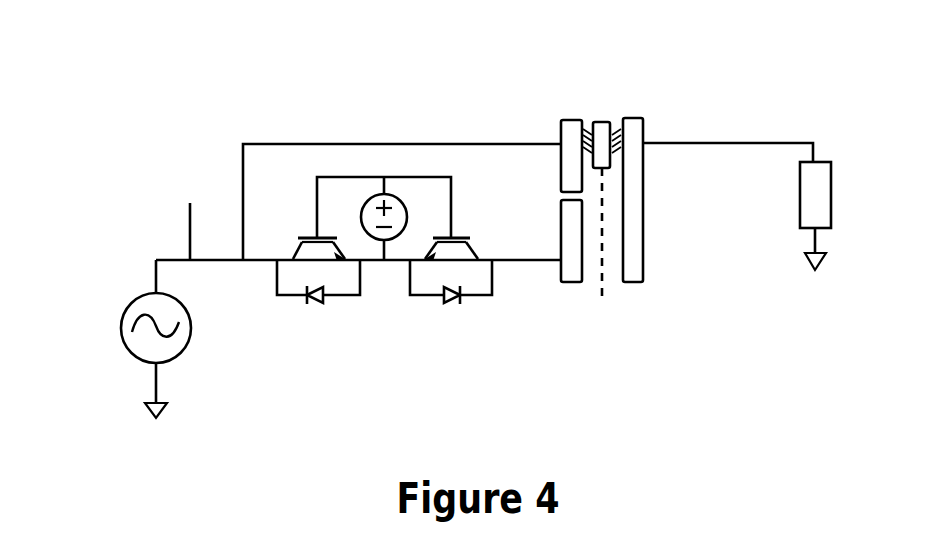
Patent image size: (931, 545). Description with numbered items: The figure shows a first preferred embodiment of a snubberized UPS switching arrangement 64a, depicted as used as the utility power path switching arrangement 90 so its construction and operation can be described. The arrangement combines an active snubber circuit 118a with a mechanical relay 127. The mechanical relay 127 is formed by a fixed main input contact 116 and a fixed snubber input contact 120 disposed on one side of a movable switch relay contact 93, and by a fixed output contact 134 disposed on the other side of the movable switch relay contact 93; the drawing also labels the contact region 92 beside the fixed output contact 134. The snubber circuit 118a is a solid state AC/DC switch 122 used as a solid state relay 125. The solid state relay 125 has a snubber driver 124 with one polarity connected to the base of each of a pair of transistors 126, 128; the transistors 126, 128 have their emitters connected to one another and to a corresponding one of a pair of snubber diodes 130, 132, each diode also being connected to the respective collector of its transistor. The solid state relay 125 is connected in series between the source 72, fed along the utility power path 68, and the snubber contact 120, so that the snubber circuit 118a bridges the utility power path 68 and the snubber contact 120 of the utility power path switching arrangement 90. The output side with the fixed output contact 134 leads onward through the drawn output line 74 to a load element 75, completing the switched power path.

The snubberized UPS switching arrangement 64a is at (207, 138).
The utility power path 68 is at (190, 215).
The source 72 is at (108, 305).
The output line 74 is at (773, 142).
The resistor 75 is at (817, 199).
The utility power path switching arrangement 90 is at (700, 267).
The gap region 92 is at (657, 278).
The movable switch relay contact 93 is at (602, 122).
The fixed main input contact 116 is at (572, 130).
The snubber circuit 118a is at (385, 325).
The fixed snubber input contact 120 is at (572, 282).
The solid state AC/DC switch 122 is at (340, 350).
The snubber driver 124 is at (367, 196).
The solid state relay 125 is at (403, 172).
The transistor 126 is at (296, 234).
The mechanical relay 127 is at (648, 292).
The transistor 128 is at (472, 234).
The snubber diode 130 is at (308, 307).
The snubber diode 132 is at (460, 313).
The fixed output contact 134 is at (633, 130).